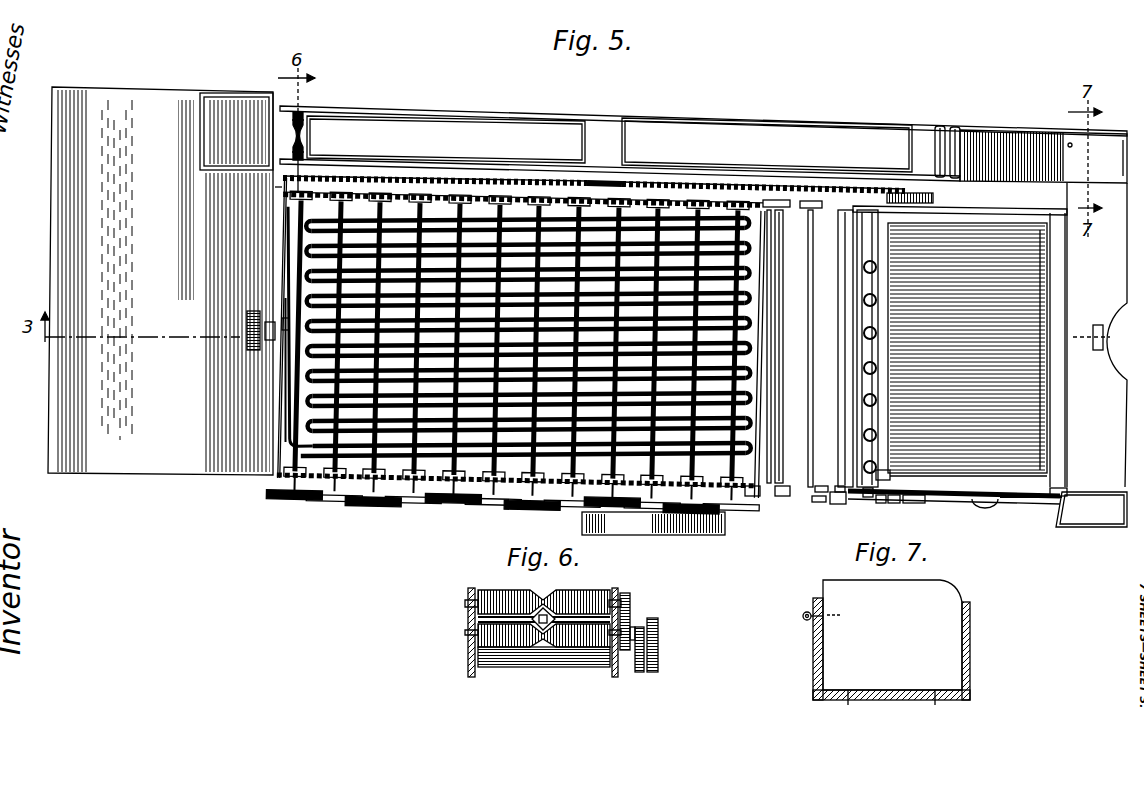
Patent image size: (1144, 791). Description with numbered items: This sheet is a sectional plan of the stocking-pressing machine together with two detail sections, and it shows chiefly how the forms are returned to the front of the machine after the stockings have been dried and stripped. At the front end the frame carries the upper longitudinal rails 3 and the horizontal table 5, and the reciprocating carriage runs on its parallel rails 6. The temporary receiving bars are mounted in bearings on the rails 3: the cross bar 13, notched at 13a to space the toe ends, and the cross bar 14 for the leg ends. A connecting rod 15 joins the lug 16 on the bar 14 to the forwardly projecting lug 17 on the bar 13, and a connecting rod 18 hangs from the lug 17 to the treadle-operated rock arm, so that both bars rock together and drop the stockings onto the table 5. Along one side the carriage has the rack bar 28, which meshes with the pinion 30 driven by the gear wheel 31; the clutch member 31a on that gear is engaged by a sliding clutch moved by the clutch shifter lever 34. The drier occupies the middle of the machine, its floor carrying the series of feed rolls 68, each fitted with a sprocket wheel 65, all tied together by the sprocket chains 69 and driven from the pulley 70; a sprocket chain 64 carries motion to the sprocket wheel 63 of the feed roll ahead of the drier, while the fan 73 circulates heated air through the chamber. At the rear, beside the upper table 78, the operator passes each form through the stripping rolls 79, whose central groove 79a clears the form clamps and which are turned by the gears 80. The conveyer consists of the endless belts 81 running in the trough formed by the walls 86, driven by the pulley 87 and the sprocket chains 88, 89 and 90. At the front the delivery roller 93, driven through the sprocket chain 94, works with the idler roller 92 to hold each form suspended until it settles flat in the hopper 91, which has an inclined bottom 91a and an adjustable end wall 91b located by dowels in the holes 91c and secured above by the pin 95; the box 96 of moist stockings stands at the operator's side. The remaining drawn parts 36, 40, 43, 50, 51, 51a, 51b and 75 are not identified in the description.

In FIG. 5, the longitudinal horizontal rails 3 is at (1015, 212).
In FIG. 5, the horizontal table 5 is at (967, 348).
In FIG. 5, the carriage rails 6 is at (1058, 503).
In FIG. 5, the cross bar 13 is at (878, 300).
In FIG. 5, the notches 13a is at (876, 402).
In FIG. 5, the cross bar 14 is at (1045, 374).
In FIG. 5, the connecting rod 15 is at (1003, 476).
In FIG. 5, the vertically extending lug 16 is at (1062, 492).
In FIG. 5, the forwardly projecting lug 17 is at (868, 497).
In FIG. 5, the connecting rod 18 is at (882, 470).
In FIG. 5, the rack bar 28 is at (945, 502).
In FIG. 5, the pinion 30 is at (822, 499).
In FIG. 5, the gear wheel 31 is at (843, 499).
In FIG. 5, the clutch member 31a is at (820, 503).
In FIG. 5, the clutch shifter lever 34 is at (838, 504).
In FIG. 5, the bracket 36 is at (985, 506).
In FIG. 5, the partition panel 40 is at (784, 336).
In FIG. 5, the rod 43 is at (813, 357).
In FIG. 5, the guide bar 50 is at (838, 408).
In FIG. 5, the gear 51 is at (893, 503).
In FIG. 5, the gear 51a is at (881, 503).
In FIG. 5, the gear 51b is at (915, 503).
In FIG. 5, the sprocket wheel 63 is at (783, 496).
In FIG. 5, the sprocket chain 64 is at (752, 496).
In FIG. 5, the sprocket wheels 65 is at (348, 468).
In FIG. 5, the feed rolls 68 is at (536, 203).
In FIG. 5, the sprocket chains 69 is at (400, 504).
In FIG. 5, the pulley 70 is at (672, 535).
In FIG. 5, the fan 73 is at (272, 302).
In FIG. 5, the end column 75 is at (1097, 335).
In FIG. 5, the upper table 78 is at (160, 281).
In FIG. 5, the stripping rolls 79 is at (308, 114).
In FIG. 6, the stripping rolls 79 is at (470, 622).
In FIG. 5, the central groove 79a is at (305, 134).
In FIG. 6, the central groove 79a is at (547, 600).
In FIG. 5, the gears 80 is at (282, 166).
In FIG. 6, the gears 80 is at (632, 612).
In FIG. 5, the endless belts 81 is at (609, 144).
In FIG. 6, the endless belts 81 is at (545, 667).
In FIG. 5, the trough walls 86 is at (470, 162).
In FIG. 6, the trough walls 86 is at (470, 588).
In FIG. 5, the pulley 87 is at (918, 208).
In FIG. 5, the sprocket chain 88 is at (788, 186).
In FIG. 5, the sprocket chain 89 is at (592, 180).
In FIG. 5, the sprocket chain 90 is at (505, 176).
In FIG. 6, the sprocket chain 90 is at (640, 672).
In FIG. 5, the hopper 91 is at (1018, 131).
In FIG. 5, the inclined bottom 91a is at (1068, 168).
In FIG. 7, the inclined bottom 91a is at (842, 702).
In FIG. 5, the end wall 91b is at (1125, 136).
In FIG. 7, the end wall 91b is at (812, 672).
In FIG. 7, the holes 91c is at (850, 705).
In FIG. 5, the idler roller 92 is at (963, 128).
In FIG. 5, the delivery roller 93 is at (941, 126).
In FIG. 5, the sprocket chain 94 is at (935, 190).
In FIG. 5, the pin 95 is at (1072, 146).
In FIG. 7, the pin 95 is at (800, 620).
In FIG. 5, the box 96 is at (1080, 518).